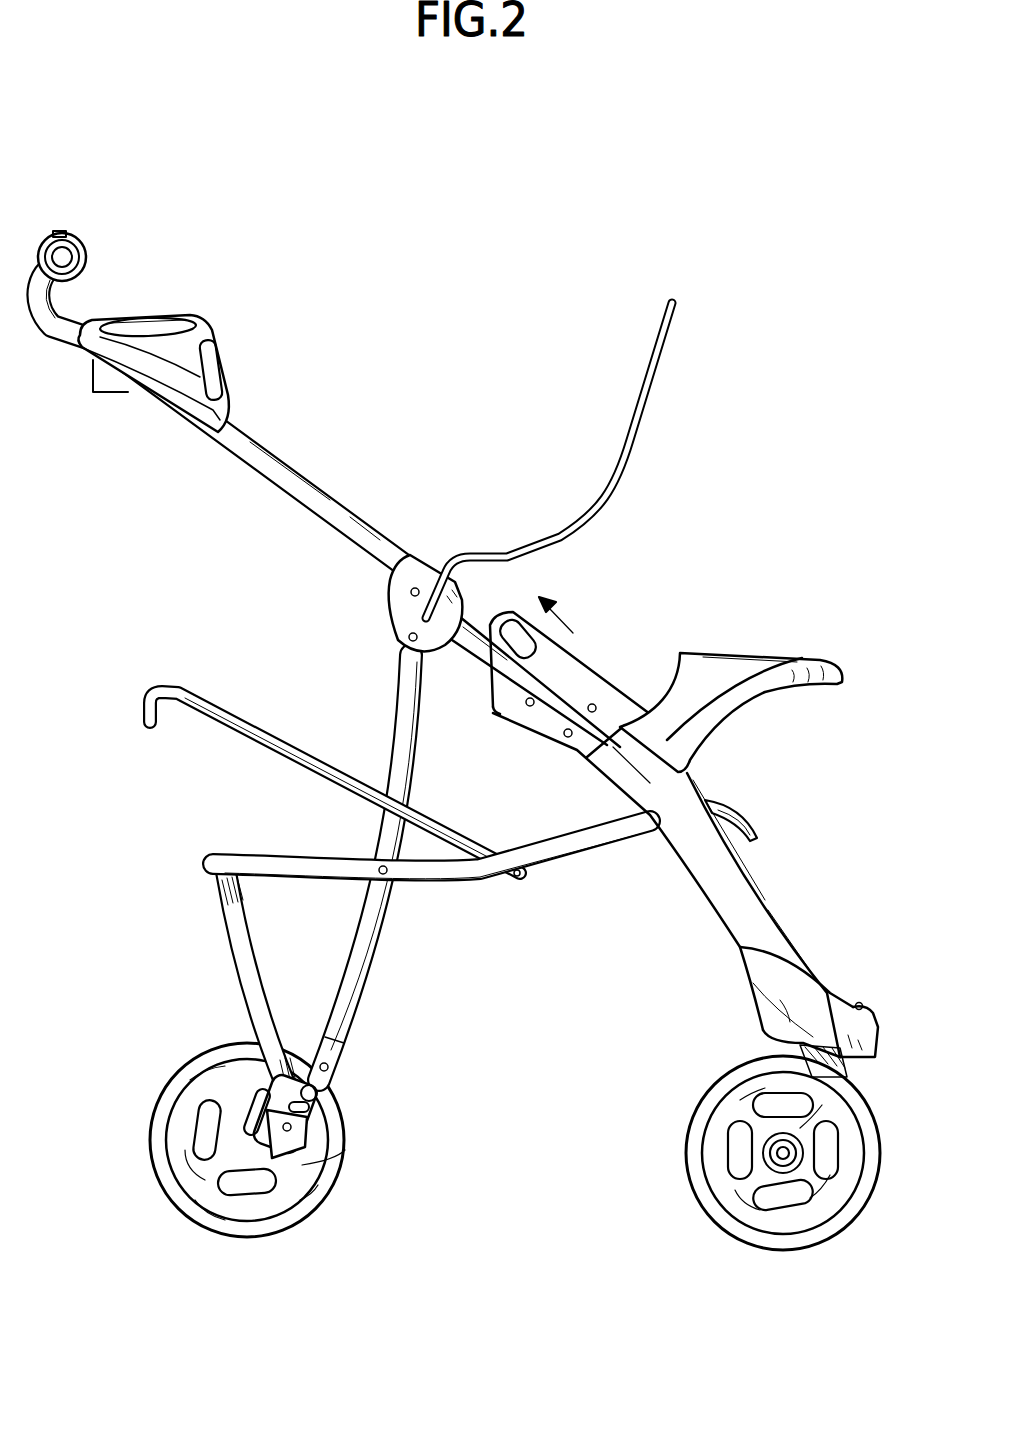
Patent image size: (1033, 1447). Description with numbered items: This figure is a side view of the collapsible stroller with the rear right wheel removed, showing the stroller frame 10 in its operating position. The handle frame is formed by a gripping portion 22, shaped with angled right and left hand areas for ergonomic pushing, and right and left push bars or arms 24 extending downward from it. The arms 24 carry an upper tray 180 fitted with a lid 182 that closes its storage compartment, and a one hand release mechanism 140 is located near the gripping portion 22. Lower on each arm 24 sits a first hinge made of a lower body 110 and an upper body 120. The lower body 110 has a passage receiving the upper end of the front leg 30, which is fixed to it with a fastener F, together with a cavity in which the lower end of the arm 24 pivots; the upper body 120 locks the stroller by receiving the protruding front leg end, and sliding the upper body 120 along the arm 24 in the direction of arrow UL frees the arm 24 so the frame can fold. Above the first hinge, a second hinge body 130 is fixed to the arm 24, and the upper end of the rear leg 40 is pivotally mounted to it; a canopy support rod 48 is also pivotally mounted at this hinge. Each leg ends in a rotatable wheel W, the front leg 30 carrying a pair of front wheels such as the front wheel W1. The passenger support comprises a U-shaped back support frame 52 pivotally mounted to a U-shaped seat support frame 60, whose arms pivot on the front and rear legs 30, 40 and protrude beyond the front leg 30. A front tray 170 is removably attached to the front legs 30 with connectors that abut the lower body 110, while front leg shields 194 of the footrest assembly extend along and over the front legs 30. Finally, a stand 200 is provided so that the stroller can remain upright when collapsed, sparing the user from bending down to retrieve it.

The stroller frame 10 is at (266, 490).
The gripping portion 22 is at (57, 303).
The push bars or arms 24 is at (270, 466).
The front legs 30 is at (757, 888).
The rear legs 40 is at (373, 973).
The canopy support rod 48 is at (657, 368).
The back support frame 52 is at (207, 725).
The seat support frame 60 is at (278, 855).
The lower body 110 is at (580, 742).
The upper body 120 is at (507, 697).
The second hinge body 130 is at (392, 612).
The one hand release mechanism 140 is at (75, 240).
The front tray 170 is at (803, 660).
The upper tray 180 is at (233, 358).
The lid 182 is at (190, 318).
The front leg shields 194 is at (700, 808).
The stand 200 is at (247, 1000).
The fastener F is at (592, 707).
The unlocking direction arrow UL is at (564, 608).
The wheel W is at (246, 1238).
The front wheel W1 is at (757, 1251).